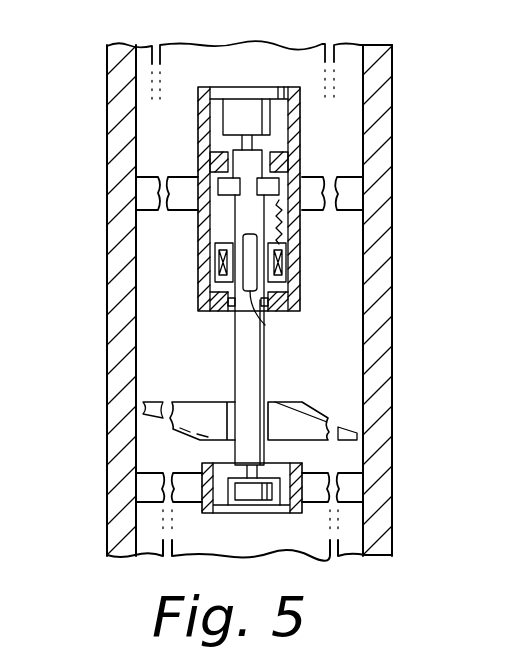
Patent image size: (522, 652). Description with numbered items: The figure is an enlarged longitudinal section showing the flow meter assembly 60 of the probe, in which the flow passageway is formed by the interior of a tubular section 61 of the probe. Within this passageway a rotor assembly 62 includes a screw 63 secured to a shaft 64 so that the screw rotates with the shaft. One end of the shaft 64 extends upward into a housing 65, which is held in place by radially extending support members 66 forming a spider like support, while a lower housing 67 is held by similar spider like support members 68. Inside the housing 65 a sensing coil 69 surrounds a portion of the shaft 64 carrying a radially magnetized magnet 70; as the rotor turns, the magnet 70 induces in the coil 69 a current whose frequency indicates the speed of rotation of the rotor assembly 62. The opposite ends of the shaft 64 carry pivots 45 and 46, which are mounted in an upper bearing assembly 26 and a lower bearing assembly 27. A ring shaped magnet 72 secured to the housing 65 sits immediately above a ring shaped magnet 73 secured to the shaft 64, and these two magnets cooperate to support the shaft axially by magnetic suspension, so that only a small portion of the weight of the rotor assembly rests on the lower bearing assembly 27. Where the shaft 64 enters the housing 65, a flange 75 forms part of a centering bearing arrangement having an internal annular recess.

The tubular section 61 is at (122, 44).
The flow meter assembly 60 is at (283, 73).
The bearing assembly 26 is at (241, 86).
The housing 65 is at (300, 110).
The pivot 45 is at (255, 143).
The ring shaped magnet 72 is at (286, 162).
The ring shaped magnet 73 is at (282, 205).
The radially magnetized magnet 70 is at (265, 325).
The sensing coil 69 is at (286, 260).
The flange 75 is at (222, 313).
The support members 66 is at (184, 175).
The support members 68 is at (183, 478).
The screw 63 is at (198, 410).
The rotor assembly 62 is at (318, 402).
The shaft 64 is at (259, 380).
The bearing assembly 27 is at (216, 514).
The lower housing 67 is at (300, 500).
The pivot 46 is at (275, 470).